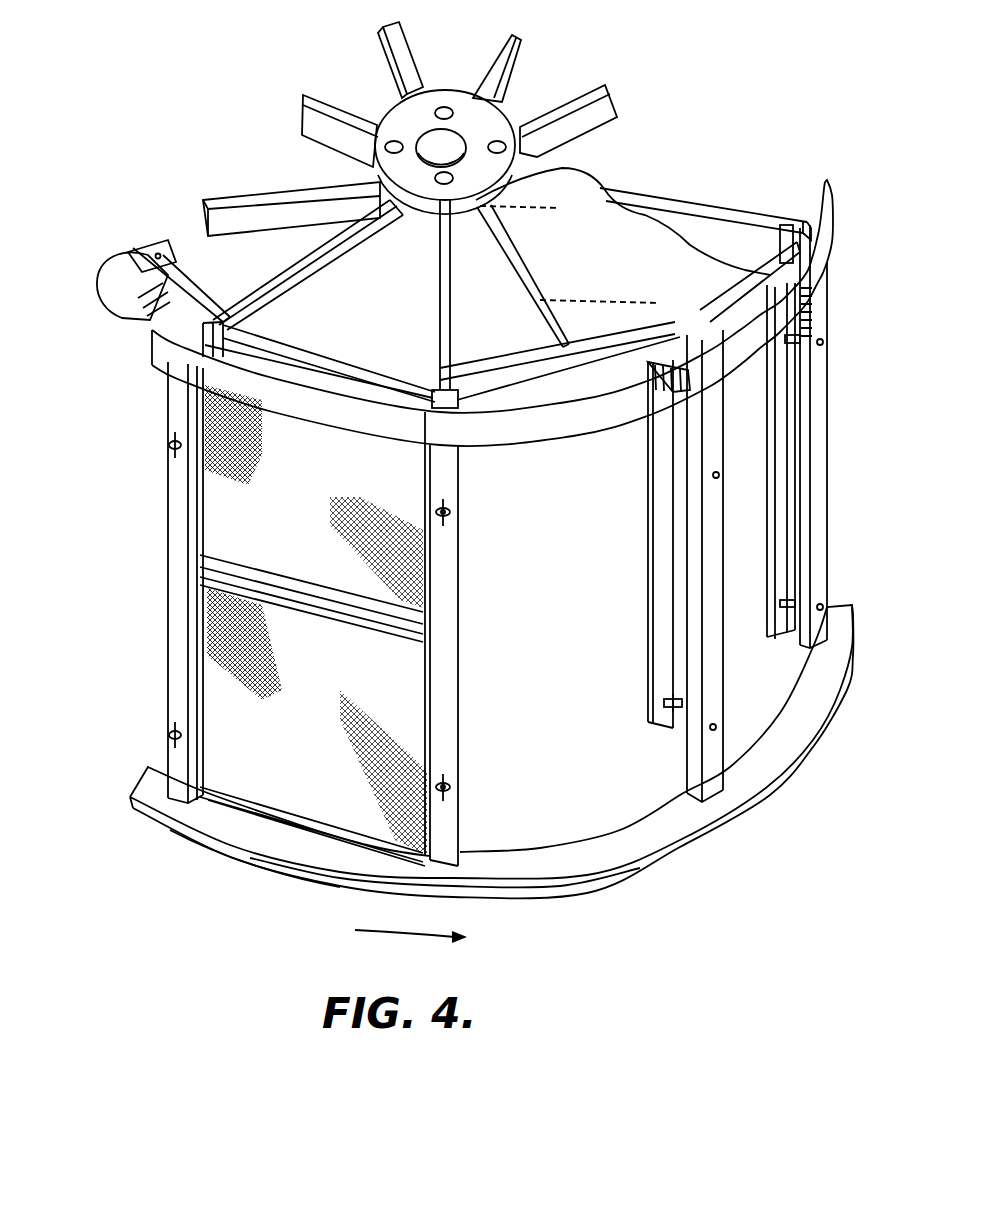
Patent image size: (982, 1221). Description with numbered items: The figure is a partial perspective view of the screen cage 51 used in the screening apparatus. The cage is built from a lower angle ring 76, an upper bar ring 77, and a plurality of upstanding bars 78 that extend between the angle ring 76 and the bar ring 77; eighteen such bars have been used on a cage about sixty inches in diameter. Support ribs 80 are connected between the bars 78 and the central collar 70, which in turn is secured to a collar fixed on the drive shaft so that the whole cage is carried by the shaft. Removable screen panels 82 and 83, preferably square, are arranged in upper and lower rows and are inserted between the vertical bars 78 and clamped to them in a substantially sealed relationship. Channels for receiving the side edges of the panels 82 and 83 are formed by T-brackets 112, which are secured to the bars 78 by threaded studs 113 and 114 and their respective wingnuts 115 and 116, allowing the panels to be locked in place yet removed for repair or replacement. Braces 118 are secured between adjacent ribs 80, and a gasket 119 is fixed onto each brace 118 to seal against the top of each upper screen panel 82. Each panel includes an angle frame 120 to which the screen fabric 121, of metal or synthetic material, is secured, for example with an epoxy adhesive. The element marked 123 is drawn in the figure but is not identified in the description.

The central collar 70 is at (446, 91).
The support ribs 80 is at (382, 62).
The deflector plate 123 is at (583, 182).
The braces 118 is at (413, 362).
The upper bar ring 77 is at (567, 413).
The lower angle ring 76 is at (190, 813).
The screen cage 51 is at (237, 850).
The upstanding bars 78 is at (450, 602).
The upper screen panel 82 is at (233, 527).
The lower screen panel 83 is at (215, 676).
The angle frame 120 is at (227, 600).
The screen fabric 121 is at (237, 743).
The wingnut 115 is at (455, 510).
The wingnut 116 is at (455, 783).
The T-brackets 112 is at (648, 570).
The threaded stud 113 is at (670, 388).
The threaded stud 114 is at (673, 722).
The gasket 119 is at (130, 307).